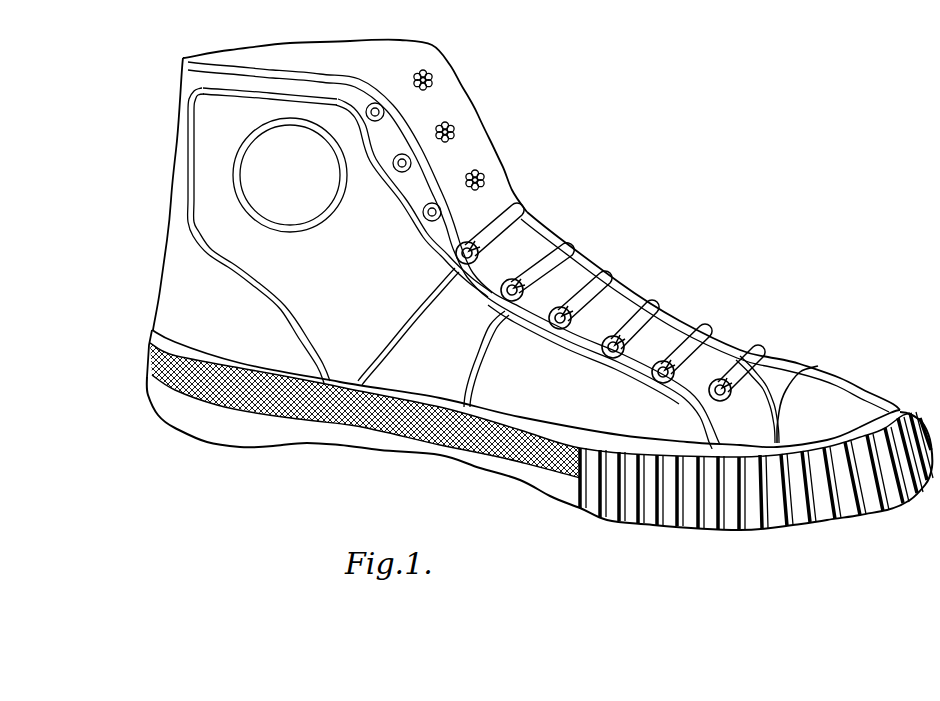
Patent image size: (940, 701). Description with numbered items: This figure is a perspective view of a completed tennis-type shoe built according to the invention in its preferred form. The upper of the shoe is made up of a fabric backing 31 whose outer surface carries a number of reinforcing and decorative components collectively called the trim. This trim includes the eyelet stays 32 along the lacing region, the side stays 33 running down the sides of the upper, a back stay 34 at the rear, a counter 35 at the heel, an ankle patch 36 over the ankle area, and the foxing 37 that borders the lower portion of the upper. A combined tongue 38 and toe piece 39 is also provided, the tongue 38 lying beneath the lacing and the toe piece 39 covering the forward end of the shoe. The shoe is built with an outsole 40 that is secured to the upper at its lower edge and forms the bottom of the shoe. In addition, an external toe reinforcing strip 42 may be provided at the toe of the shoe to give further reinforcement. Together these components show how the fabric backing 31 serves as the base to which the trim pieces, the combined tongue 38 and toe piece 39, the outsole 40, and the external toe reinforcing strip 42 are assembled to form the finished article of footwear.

The fabric backing 31 is at (357, 53).
The eyelet stays 32 is at (423, 190).
The side stays 33 is at (447, 387).
The back stay 34 is at (181, 179).
The counter 35 is at (213, 313).
The ankle patch 36 is at (310, 163).
The foxing 37 is at (230, 407).
The tongue 38 is at (617, 303).
The toe piece 39 is at (841, 397).
The outsole 40 is at (513, 463).
The external toe reinforcing strip 42 is at (710, 520).